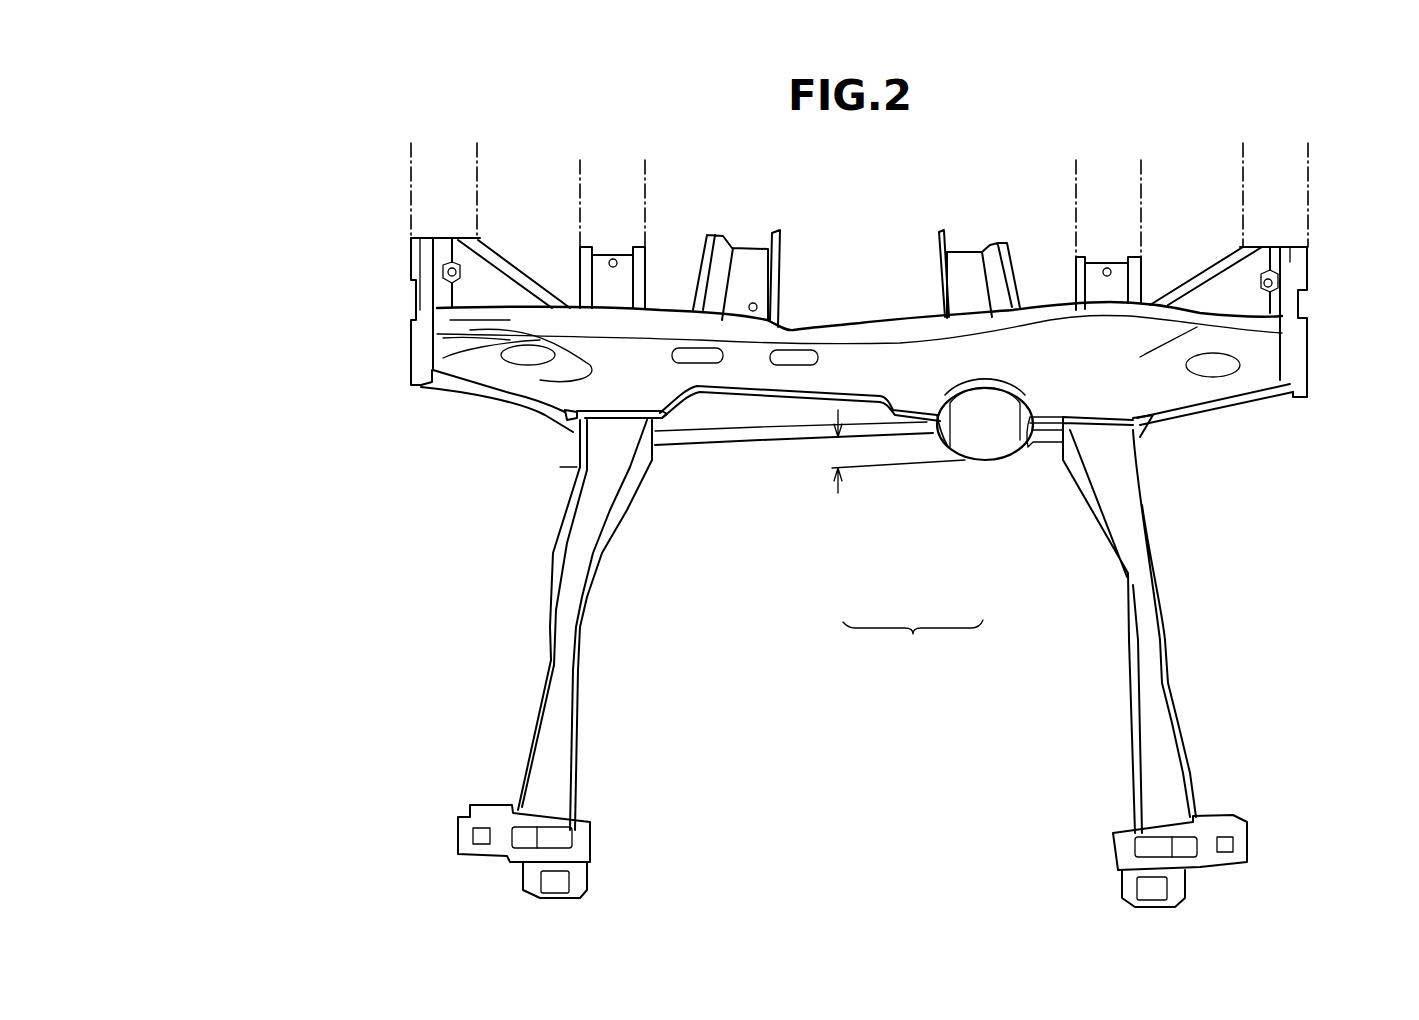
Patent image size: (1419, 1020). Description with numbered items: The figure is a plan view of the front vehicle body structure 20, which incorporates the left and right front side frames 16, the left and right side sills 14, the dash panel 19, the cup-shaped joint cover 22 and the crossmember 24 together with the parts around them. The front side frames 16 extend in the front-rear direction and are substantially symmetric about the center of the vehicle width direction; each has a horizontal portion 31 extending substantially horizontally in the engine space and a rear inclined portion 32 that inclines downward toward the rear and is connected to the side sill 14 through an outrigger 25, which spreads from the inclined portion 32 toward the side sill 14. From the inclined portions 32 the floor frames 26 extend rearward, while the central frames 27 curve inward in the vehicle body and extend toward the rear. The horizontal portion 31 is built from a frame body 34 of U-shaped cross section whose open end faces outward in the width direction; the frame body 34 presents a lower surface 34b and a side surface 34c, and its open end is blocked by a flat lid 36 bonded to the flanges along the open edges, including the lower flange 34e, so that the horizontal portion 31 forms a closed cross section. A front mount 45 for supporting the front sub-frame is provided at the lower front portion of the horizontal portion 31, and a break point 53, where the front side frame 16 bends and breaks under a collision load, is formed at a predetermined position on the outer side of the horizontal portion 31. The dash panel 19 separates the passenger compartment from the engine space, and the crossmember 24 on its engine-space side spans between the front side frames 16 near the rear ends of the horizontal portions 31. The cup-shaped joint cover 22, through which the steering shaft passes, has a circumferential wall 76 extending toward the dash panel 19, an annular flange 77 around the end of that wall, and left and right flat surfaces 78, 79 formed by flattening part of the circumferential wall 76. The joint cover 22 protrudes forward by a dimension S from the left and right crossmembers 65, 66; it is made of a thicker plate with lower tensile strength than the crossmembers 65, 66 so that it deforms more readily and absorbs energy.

The front vehicle body structure 20 is at (258, 100).
The side sill 14 is at (1308, 167).
The floor frame 26 is at (1143, 195).
The central frame 27 is at (965, 247).
The outrigger 25 is at (1293, 277).
The inclined portion 32 is at (1148, 262).
The dash panel 19 is at (850, 314).
The cup-shaped joint cover 22 is at (985, 453).
The circumferential wall 76 is at (990, 405).
The annular flange 77 is at (1037, 405).
The flat surface 79 is at (945, 408).
The flat surface 78 is at (1040, 400).
The break point 53 is at (1137, 465).
The dimension S is at (840, 452).
The crossmember 66 is at (760, 454).
The crossmember 65 is at (1049, 457).
The crossmember 24 is at (913, 645).
The front side frame 16 is at (1172, 672).
The horizontal portion 31 is at (1152, 626).
The frame body 34 is at (1136, 788).
The lower surface 34b is at (1165, 755).
The side surface 34c is at (1128, 742).
The lower flange 34e is at (1170, 725).
The flat lid 36 is at (1193, 793).
The front mount 45 is at (1240, 850).